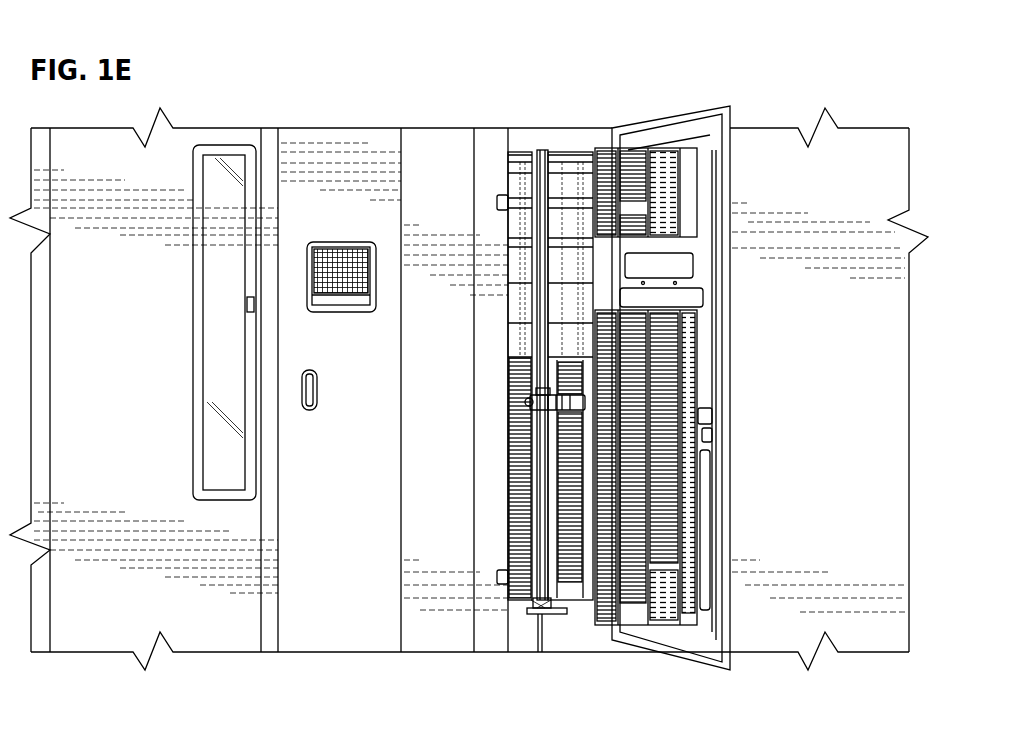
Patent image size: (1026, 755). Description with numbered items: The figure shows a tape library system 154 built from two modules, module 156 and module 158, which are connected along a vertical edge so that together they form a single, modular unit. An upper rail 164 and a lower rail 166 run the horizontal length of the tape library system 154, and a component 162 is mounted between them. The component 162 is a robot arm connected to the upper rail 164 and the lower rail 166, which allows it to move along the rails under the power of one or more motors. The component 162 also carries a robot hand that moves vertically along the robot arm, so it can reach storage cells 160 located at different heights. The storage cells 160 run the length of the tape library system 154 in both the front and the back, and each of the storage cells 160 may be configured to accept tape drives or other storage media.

The tape library system 154 is at (778, 106).
The module 156 is at (473, 667).
The module 158 is at (909, 667).
The storage cells 160 is at (684, 337).
The component 162 is at (526, 394).
The upper rail 164 is at (544, 153).
The lower rail 166 is at (566, 613).